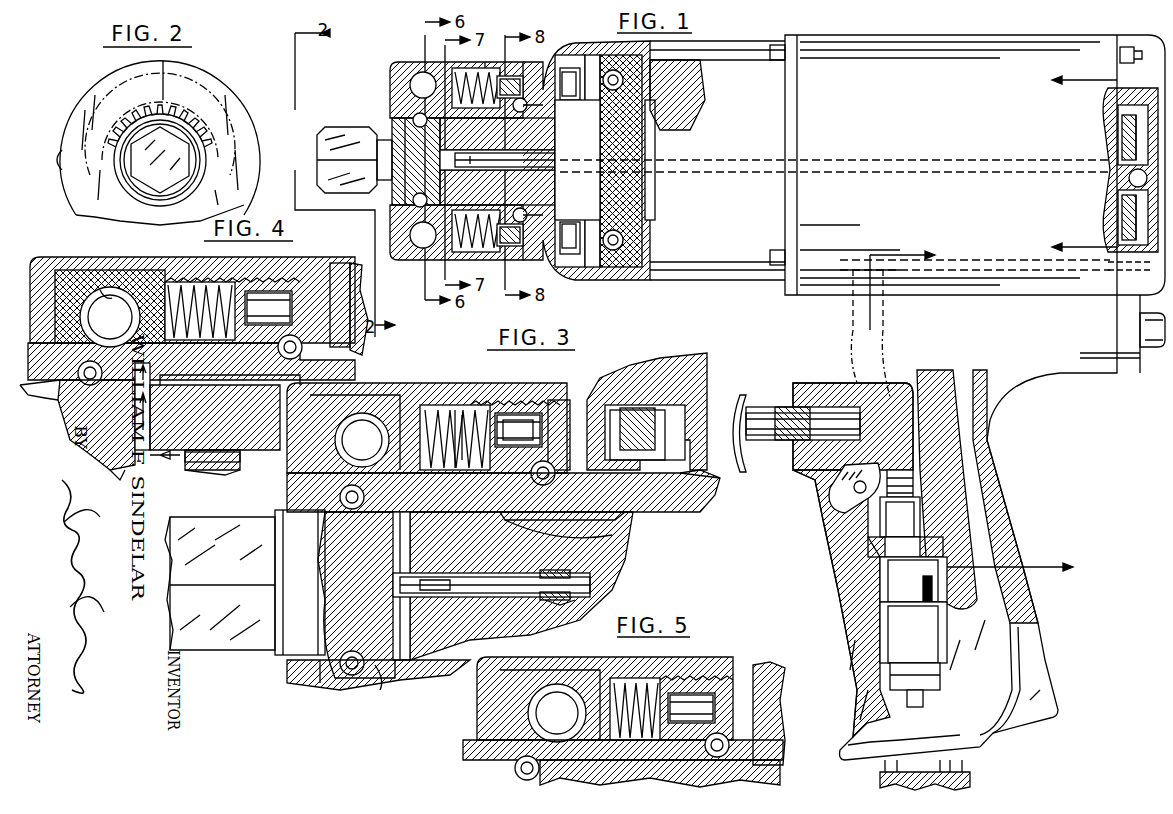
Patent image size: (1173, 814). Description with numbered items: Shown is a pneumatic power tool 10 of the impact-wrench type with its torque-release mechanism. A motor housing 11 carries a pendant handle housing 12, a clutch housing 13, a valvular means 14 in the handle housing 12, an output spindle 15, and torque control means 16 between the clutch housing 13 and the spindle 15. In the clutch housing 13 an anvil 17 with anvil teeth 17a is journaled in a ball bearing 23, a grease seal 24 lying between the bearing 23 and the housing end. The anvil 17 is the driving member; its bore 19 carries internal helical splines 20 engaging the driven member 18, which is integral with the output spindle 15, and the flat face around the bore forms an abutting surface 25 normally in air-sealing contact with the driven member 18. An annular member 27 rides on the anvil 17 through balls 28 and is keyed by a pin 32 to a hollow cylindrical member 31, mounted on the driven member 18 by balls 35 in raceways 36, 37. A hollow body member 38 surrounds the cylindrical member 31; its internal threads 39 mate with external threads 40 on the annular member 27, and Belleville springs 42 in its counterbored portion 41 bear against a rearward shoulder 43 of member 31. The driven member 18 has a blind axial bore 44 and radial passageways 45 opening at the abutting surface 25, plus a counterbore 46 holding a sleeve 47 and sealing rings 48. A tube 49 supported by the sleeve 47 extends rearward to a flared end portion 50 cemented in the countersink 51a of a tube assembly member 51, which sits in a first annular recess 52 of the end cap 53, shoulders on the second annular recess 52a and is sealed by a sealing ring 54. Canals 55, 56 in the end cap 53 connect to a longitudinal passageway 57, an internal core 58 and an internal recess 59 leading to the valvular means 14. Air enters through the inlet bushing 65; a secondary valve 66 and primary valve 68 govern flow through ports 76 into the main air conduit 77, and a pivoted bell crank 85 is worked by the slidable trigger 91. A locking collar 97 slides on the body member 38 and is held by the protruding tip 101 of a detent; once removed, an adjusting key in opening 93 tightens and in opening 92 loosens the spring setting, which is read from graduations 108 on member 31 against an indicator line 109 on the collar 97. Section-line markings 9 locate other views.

In FIG. 1, the section line 9- 9 is at (1077, 165).
In FIG. 1, the pneumatic power tool 10 is at (752, 30).
In FIG. 1, the motor housing 11 is at (905, 70).
In FIG. 1, the pendant handle housing 12 is at (1003, 470).
In FIG. 1, the clutch housing 13 is at (612, 283).
In FIG. 4, the clutch housing 13 is at (352, 263).
In FIG. 3, the clutch housing 13 is at (598, 400).
In FIG. 5, the clutch housing 13 is at (755, 680).
In FIG. 1, the valvular means 14 is at (868, 597).
In FIG. 2, the output spindle 15 is at (185, 160).
In FIG. 1, the output spindle 15 is at (345, 127).
In FIG. 3, the output spindle 15 is at (210, 650).
In FIG. 1, the torque control means 16 is at (486, 62).
In FIG. 1, the anvil 17 is at (642, 130).
In FIG. 4, the anvil 17 is at (245, 400).
In FIG. 3, the anvil 17 is at (660, 490).
In FIG. 1, the anvil teeth 17a is at (695, 128).
In FIG. 4, the driven member 18 is at (72, 420).
In FIG. 3, the driven member 18 is at (287, 588).
In FIG. 3, the bore 19 is at (615, 537).
In FIG. 3, the internal helical splines 20 is at (620, 520).
In FIG. 1, the ball bearing 23 is at (628, 100).
In FIG. 1, the grease seal 24 is at (580, 68).
In FIG. 3, the grease seal 24 is at (668, 372).
In FIG. 3, the abutting surface 25 is at (390, 490).
In FIG. 1, the annular member 27 is at (530, 258).
In FIG. 4, the annular member 27 is at (332, 263).
In FIG. 3, the annular member 27 is at (550, 400).
In FIG. 4, the balls 28 is at (300, 355).
In FIG. 3, the balls 28 is at (563, 410).
In FIG. 2, the hollow cylindrical member 31 is at (112, 140).
In FIG. 1, the hollow cylindrical member 31 is at (395, 118).
In FIG. 4, the hollow cylindrical member 31 is at (72, 340).
In FIG. 3, the hollow cylindrical member 31 is at (290, 487).
In FIG. 5, the hollow cylindrical member 31 is at (463, 752).
In FIG. 1, the pin 32 is at (525, 80).
In FIG. 4, the pin 32 is at (270, 290).
In FIG. 3, the pin 32 is at (510, 413).
In FIG. 4, the balls 35 is at (95, 385).
In FIG. 3, the balls 35 is at (368, 512).
In FIG. 5, the balls 35 is at (512, 775).
In FIG. 3, the ball raceway 36 is at (330, 690).
In FIG. 3, the ball raceway 37 is at (378, 685).
In FIG. 1, the hollow body member 38 is at (487, 255).
In FIG. 4, the hollow body member 38 is at (198, 278).
In FIG. 3, the hollow body member 38 is at (470, 400).
In FIG. 3, the internal threads 39 is at (475, 405).
In FIG. 3, the external threads 40 is at (528, 420).
In FIG. 3, the counterbored portion 41 is at (440, 405).
In FIG. 4, the Belleville springs 42 is at (175, 282).
In FIG. 3, the Belleville springs 42 is at (428, 405).
In FIG. 5, the Belleville springs 42 is at (685, 690).
In FIG. 4, the rearward shoulder 43 is at (142, 313).
In FIG. 4, the blind axial bore 44 is at (165, 470).
In FIG. 3, the blind axial bore 44 is at (420, 580).
In FIG. 4, the radial passageways 45 is at (108, 450).
In FIG. 3, the radial passageways 45 is at (356, 595).
In FIG. 3, the counterbore 46 is at (548, 605).
In FIG. 1, the sleeve 47 is at (535, 162).
In FIG. 3, the sleeve 47 is at (600, 578).
In FIG. 3, the resilient sealing rings 48 is at (565, 600).
In FIG. 1, the tube 49 is at (885, 158).
In FIG. 4, the tube 49 is at (232, 462).
In FIG. 3, the tube 49 is at (595, 592).
In FIG. 1, the flared rearward end portion 50 is at (1128, 182).
In FIG. 1, the tube assembly member 51 is at (1118, 120).
In FIG. 1, the countersink 51a is at (1115, 141).
In FIG. 1, the first annular recess 52 is at (1118, 215).
In FIG. 1, the second annular recess 52a is at (1118, 235).
In FIG. 1, the end cap 53 is at (1130, 45).
In FIG. 1, the sealing ring 54 is at (1105, 99).
In FIG. 1, the canal 55 is at (1108, 266).
In FIG. 1, the canal 56 is at (1125, 290).
In FIG. 1, the longitudinal passageway 57 is at (978, 272).
In FIG. 1, the internal core 58 is at (890, 330).
In FIG. 1, the internal recess 59 is at (868, 580).
In FIG. 1, the inlet bushing 65 is at (972, 773).
In FIG. 1, the secondary valve 66 is at (935, 610).
In FIG. 1, the primary valve 68 is at (923, 700).
In FIG. 1, the ports 76 is at (880, 655).
In FIG. 1, the main air conduit 77 is at (990, 528).
In FIG. 1, the pivoted bell crank 85 is at (828, 495).
In FIG. 1, the trigger 91 is at (745, 398).
In FIG. 1, the transverse opening 92 is at (412, 88).
In FIG. 4, the transverse opening 92 is at (103, 285).
In FIG. 3, the transverse opening 92 is at (355, 432).
In FIG. 5, the transverse opening 92 is at (540, 715).
In FIG. 1, the transverse opening 93 is at (415, 248).
In FIG. 2, the locking collar 97 is at (70, 193).
In FIG. 1, the locking collar 97 is at (400, 62).
In FIG. 4, the locking collar 97 is at (72, 257).
In FIG. 3, the locking collar 97 is at (372, 390).
In FIG. 5, the locking collar 97 is at (477, 686).
In FIG. 2, the protruding tip 101 is at (55, 155).
In FIG. 2, the graduations 108 is at (108, 115).
In FIG. 2, the indicator line 109 is at (163, 80).